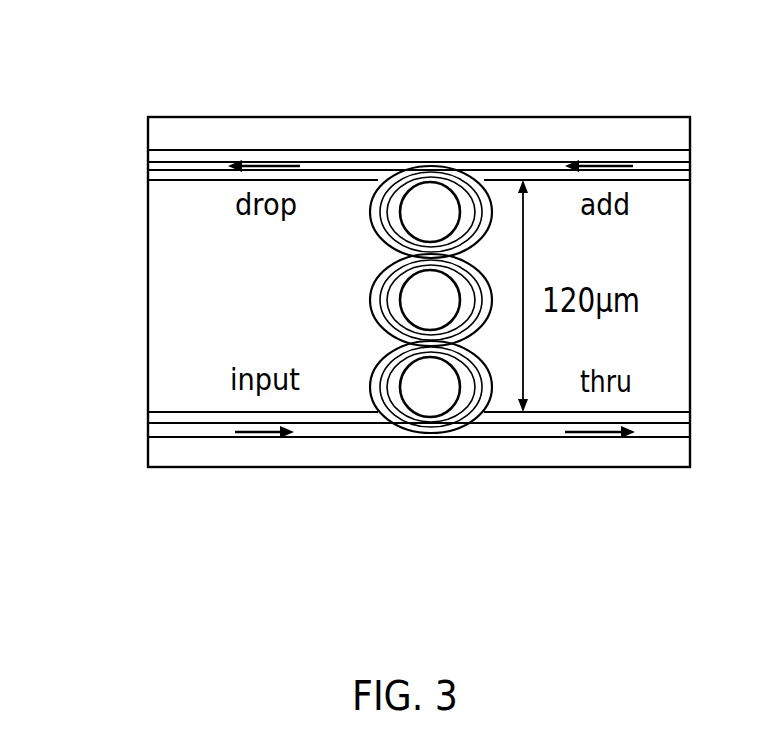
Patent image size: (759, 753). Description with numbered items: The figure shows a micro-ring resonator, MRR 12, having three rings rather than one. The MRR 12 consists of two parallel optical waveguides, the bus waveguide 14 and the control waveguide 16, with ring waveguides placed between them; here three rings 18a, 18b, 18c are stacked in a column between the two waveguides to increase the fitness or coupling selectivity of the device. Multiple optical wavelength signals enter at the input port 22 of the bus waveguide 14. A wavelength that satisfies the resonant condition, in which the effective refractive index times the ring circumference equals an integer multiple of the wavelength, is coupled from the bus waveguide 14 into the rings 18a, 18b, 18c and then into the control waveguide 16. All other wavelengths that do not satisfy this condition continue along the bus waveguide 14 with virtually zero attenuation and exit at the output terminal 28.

The MRR 12 is at (394, 70).
The bus waveguide 14 is at (523, 432).
The control waveguide 16 is at (523, 158).
The ring 18a is at (373, 227).
The ring 18b is at (375, 273).
The ring 18c is at (377, 357).
The input port 22 is at (162, 433).
The output Terminal 4 28 is at (673, 432).